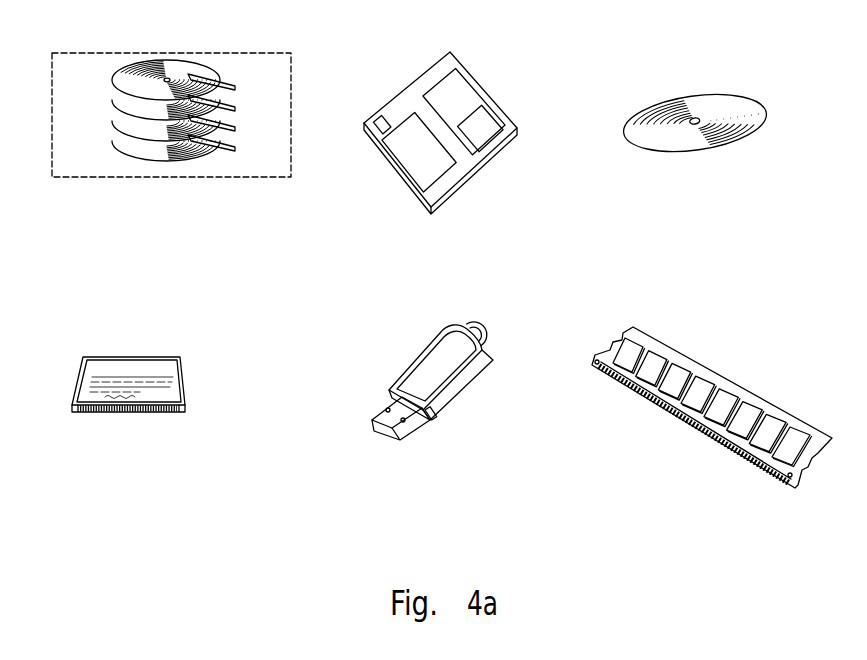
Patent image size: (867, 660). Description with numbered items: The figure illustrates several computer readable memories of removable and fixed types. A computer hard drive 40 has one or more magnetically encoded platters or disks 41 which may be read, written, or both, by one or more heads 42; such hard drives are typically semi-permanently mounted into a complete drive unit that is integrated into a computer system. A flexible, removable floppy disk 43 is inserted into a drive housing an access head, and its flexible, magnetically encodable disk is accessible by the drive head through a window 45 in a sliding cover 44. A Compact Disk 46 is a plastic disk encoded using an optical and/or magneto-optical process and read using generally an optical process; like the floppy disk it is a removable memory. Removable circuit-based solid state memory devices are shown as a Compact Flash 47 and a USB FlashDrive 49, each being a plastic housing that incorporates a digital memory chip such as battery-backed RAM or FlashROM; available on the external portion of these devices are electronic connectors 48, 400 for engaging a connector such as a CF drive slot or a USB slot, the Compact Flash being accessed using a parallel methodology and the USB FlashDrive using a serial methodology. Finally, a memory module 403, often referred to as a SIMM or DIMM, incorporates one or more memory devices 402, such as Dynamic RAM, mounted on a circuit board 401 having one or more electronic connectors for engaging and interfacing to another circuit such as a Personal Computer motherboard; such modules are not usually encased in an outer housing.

The computer hard drive 40 is at (284, 52).
The magnetically encoded platters or disks 41 is at (118, 128).
The heads 42 is at (240, 125).
The floppy disk 43 is at (453, 53).
The sliding cover 44 is at (466, 82).
The window 45 is at (484, 118).
The Compact Disk 46 is at (738, 105).
The Compact Flash 47 is at (82, 370).
The electronic connector 48 is at (100, 415).
The USB FlashDrive 49 is at (417, 358).
The electronic connector 400 is at (375, 437).
The circuit board 401 is at (723, 377).
The memory devices 402 is at (657, 350).
The memory module 403 is at (678, 428).